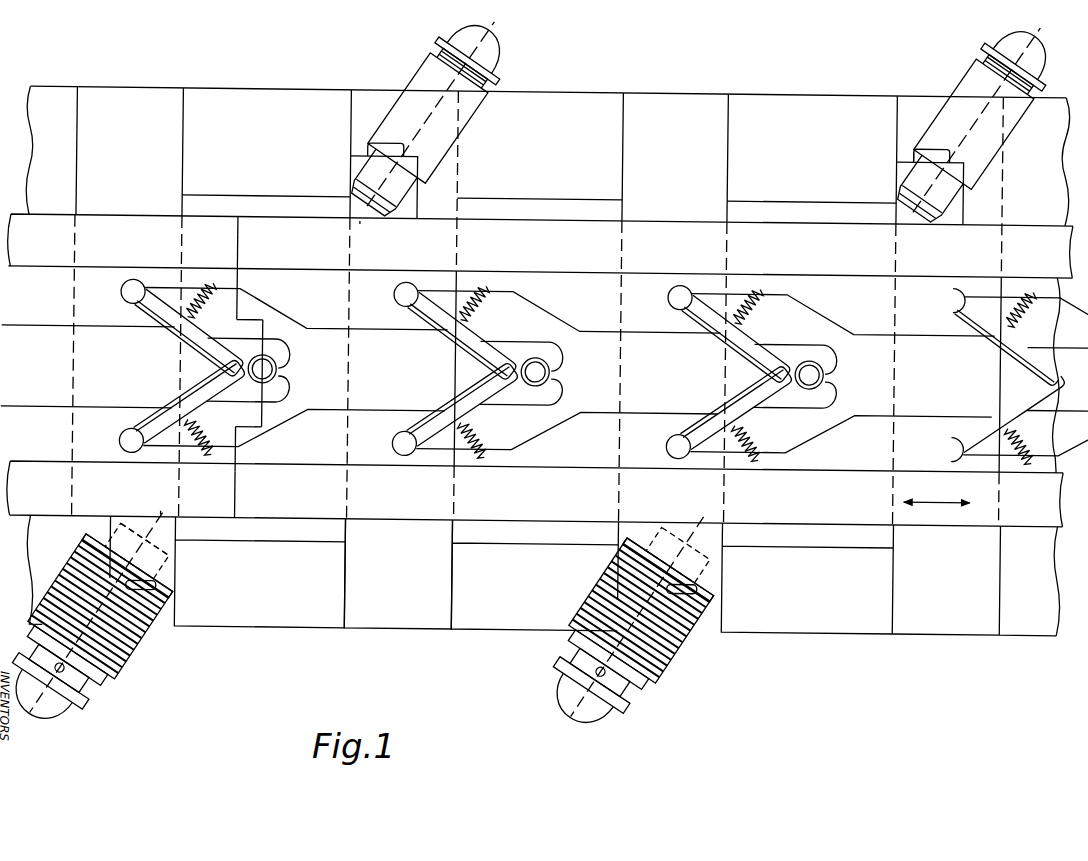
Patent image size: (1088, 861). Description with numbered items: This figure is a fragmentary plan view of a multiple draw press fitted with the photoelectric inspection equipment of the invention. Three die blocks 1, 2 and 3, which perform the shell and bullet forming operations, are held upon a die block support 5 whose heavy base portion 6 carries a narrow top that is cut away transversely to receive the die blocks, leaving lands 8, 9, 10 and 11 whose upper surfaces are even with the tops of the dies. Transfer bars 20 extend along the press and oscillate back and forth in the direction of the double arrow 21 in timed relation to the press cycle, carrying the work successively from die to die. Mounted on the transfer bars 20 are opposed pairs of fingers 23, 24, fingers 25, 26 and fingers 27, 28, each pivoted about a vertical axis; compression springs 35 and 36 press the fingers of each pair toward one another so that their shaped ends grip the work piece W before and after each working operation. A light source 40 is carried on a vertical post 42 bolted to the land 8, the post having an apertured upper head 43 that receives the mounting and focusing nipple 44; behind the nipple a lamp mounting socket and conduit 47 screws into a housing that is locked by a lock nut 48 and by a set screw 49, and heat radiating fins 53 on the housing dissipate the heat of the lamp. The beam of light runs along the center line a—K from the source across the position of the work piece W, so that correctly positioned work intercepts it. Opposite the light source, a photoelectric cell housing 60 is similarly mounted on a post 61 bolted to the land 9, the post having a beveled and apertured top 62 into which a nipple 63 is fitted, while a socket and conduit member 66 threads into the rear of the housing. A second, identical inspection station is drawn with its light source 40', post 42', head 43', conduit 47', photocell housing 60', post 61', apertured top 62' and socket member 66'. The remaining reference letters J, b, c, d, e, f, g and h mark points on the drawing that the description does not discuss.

The die block 1 is at (285, 620).
The die block 2 is at (495, 625).
The die block 3 is at (810, 623).
The die block support 5 is at (407, 618).
The base portion 6 is at (691, 86).
The land 8 is at (85, 353).
The land 9 is at (357, 365).
The land 10 is at (626, 366).
The land 11 is at (900, 365).
The transfer bars 20 is at (579, 236).
The double arrow 21 is at (946, 496).
The finger 23 is at (200, 392).
The finger 24 is at (198, 339).
The finger 25 is at (479, 391).
The finger 26 is at (480, 338).
The finger 27 is at (744, 391).
The finger 28 is at (750, 339).
The compression spring 35 is at (188, 452).
The compression spring 36 is at (190, 312).
The light source 40 is at (100, 619).
The threaded adjusting screw 40' is at (651, 616).
The vertical post 42 is at (171, 583).
The lock nut 42' is at (719, 597).
The apertured upper head 43 is at (161, 551).
The nut 43' is at (708, 558).
The mounting and focusing nipple 44 is at (187, 558).
The lamp mounting socket and conduit 47 is at (49, 694).
The screw head 47' is at (587, 698).
The lock nut 48 is at (173, 601).
The set screw 49 is at (104, 686).
The heat radiating fins 53 is at (143, 647).
The photoelectric cell housing 60 is at (427, 113).
The plunger cylinder 60' is at (973, 122).
The post 61 is at (358, 156).
The collar 61' is at (892, 141).
The beveled and apertured top 62 is at (365, 183).
The nozzle 62' is at (913, 190).
The nipple 63 is at (402, 197).
The socket and conduit member 66 is at (481, 52).
The cap 66' is at (1025, 58).
The work piece W is at (277, 367).
The center line end point K is at (436, 108).
The axis point J is at (358, 230).
The center line end point a is at (92, 624).
The axis point b is at (161, 508).
The reference point c is at (240, 495).
The reference point d is at (229, 441).
The reference point e is at (255, 422).
The reference point f is at (267, 369).
The reference point g is at (242, 321).
The reference point h is at (236, 259).